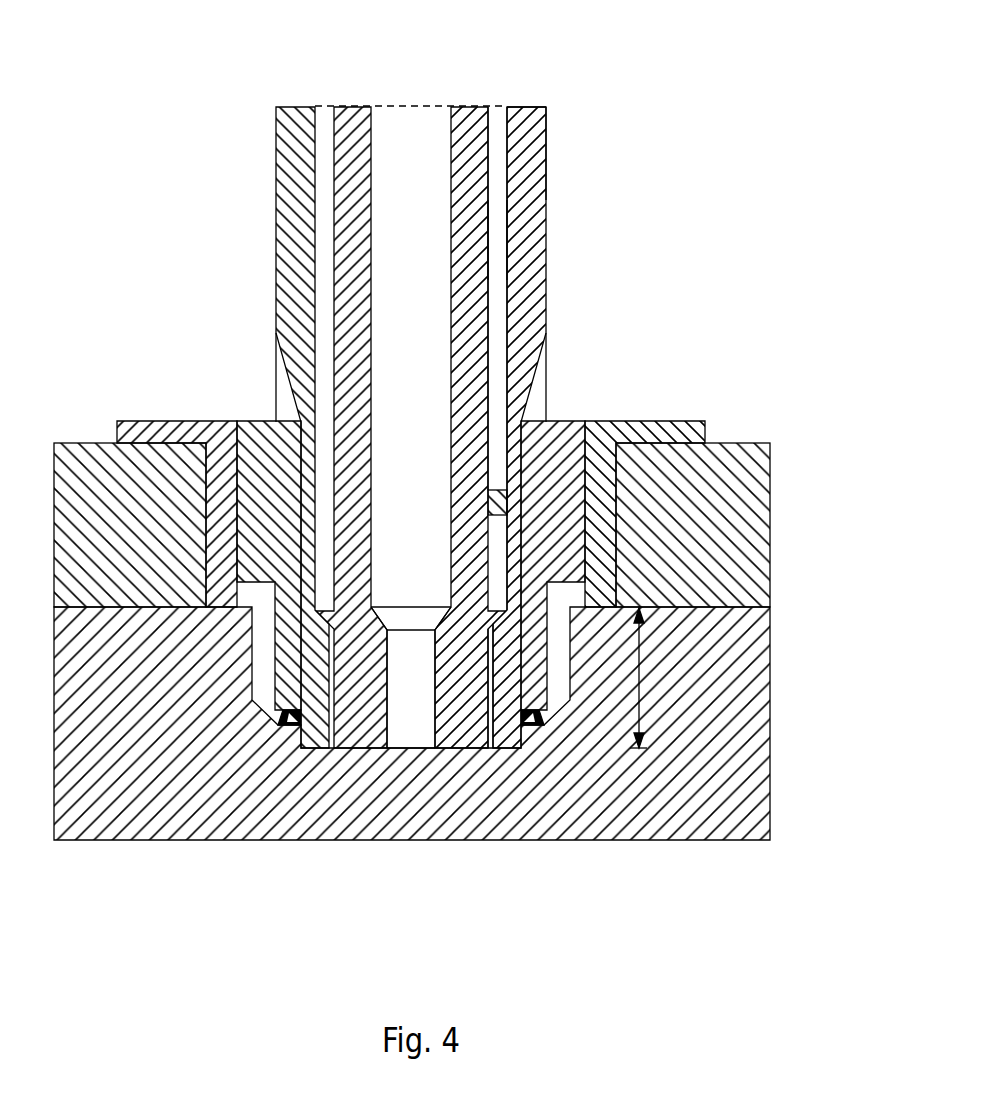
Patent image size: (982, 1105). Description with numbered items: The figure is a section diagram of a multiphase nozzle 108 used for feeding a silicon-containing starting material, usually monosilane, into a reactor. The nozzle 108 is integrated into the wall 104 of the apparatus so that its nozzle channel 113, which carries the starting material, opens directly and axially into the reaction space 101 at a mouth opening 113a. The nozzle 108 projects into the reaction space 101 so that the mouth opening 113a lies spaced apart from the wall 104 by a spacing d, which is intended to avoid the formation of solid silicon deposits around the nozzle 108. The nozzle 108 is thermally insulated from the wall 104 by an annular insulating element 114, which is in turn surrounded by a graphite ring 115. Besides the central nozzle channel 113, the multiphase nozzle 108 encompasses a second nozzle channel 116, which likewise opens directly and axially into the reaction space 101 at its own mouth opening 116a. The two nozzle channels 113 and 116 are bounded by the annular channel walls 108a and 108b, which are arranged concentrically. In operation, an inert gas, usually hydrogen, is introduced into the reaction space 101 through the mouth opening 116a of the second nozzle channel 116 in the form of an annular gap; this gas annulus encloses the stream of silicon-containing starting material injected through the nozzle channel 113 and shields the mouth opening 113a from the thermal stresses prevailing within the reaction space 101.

The reaction space 101 is at (87, 807).
The wall 104 is at (748, 463).
The multiphase nozzle 108 is at (278, 163).
The annular channel wall 108a is at (532, 118).
The annular channel wall 108b is at (476, 237).
The nozzle channel 113 is at (398, 118).
The mouth opening 113a is at (417, 750).
The annular insulating element 114 is at (562, 433).
The graphite ring 115 is at (683, 432).
The second nozzle channel 116 is at (500, 120).
The mouth opening 116a is at (483, 750).
The spacing d is at (640, 667).